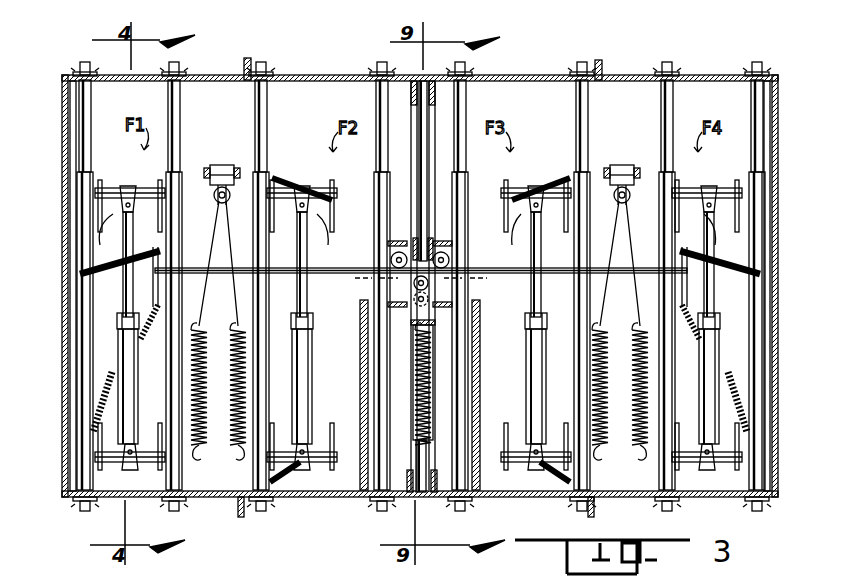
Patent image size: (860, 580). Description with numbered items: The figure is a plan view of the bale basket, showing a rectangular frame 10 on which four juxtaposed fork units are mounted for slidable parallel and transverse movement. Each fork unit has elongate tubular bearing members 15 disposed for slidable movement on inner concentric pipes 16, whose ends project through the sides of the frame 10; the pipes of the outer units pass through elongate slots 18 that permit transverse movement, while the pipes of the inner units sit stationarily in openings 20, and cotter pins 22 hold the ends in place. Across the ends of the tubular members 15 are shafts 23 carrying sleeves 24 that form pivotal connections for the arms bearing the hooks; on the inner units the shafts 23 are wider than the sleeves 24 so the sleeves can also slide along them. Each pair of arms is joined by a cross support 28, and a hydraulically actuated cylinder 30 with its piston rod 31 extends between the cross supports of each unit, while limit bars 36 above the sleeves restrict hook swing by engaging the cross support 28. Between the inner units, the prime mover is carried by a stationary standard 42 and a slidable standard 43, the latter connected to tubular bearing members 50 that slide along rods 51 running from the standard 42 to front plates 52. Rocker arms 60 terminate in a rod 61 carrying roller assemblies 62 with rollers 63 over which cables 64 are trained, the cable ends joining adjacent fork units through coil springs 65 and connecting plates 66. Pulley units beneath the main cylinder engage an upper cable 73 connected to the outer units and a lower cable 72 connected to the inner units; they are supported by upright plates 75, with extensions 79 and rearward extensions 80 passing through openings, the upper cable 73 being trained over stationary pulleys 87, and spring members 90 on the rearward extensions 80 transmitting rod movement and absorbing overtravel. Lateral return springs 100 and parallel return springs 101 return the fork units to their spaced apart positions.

The rectangular frame 10 is at (63, 80).
The tubular bearing member 15 is at (70, 388).
The inner concentric pipe 16 is at (79, 112).
The elongate slot 18 is at (120, 81).
The opening 20 is at (268, 80).
The cotter pin 22 is at (252, 67).
The shaft 23 is at (352, 190).
The sleeve 24 is at (418, 234).
The cross support 28 is at (108, 188).
The hydraulically actuated cylinder 30 is at (118, 357).
The piston rod 31 is at (123, 295).
The limit bar 36 is at (148, 470).
The standard 42 is at (410, 495).
The standard 43 is at (414, 242).
The tubular bearing member 50 is at (413, 207).
The rod 51 is at (427, 125).
The front plate 52 is at (412, 82).
The rocker arm 60 is at (228, 165).
The rod 61 is at (213, 168).
The roller assembly 62 is at (217, 165).
The roller 63 is at (214, 192).
The cable 64 is at (212, 215).
The coil spring 65 is at (236, 449).
The connecting plate 66 is at (238, 462).
The lower cable 72 is at (492, 274).
The upper cable 73 is at (350, 274).
The upright plate 75 is at (427, 447).
The extension 79 is at (427, 222).
The rearward extension 80 is at (430, 495).
The stationary pulley 87 is at (391, 259).
The spring member 90 is at (425, 410).
The lateral return spring 100 is at (100, 260).
The parallel return spring 101 is at (100, 402).